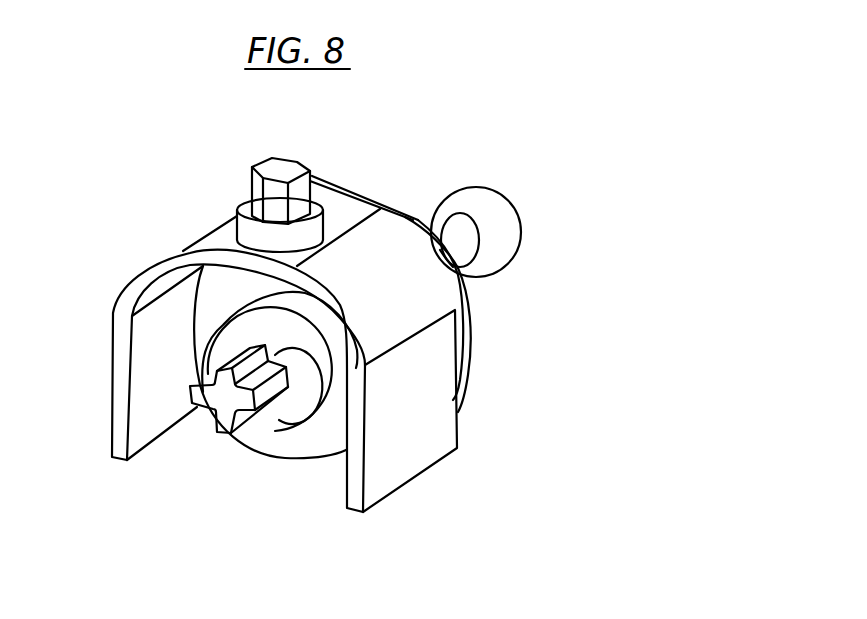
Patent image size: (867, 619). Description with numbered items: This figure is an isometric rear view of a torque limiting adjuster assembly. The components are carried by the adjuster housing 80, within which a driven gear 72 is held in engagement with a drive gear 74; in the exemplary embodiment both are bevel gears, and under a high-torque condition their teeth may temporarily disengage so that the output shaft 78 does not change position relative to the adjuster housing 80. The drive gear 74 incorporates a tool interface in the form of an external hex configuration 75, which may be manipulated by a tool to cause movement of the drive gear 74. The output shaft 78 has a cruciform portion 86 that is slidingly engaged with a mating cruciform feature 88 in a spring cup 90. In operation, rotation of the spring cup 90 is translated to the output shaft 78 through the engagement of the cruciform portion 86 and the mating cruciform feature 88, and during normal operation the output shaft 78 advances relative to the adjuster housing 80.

The driven gear 72 is at (310, 450).
The drive gear 74 is at (237, 205).
The external hex configuration 75 is at (294, 166).
The output shaft 78 is at (450, 235).
The adjuster housing 80 is at (423, 440).
The cruciform portion 86 is at (195, 390).
The mating cruciform feature 88 is at (292, 418).
The spring cup 90 is at (253, 428).